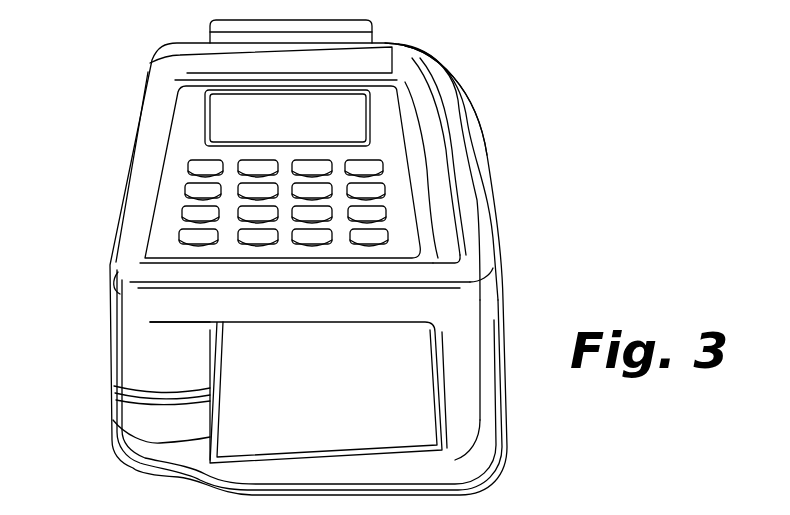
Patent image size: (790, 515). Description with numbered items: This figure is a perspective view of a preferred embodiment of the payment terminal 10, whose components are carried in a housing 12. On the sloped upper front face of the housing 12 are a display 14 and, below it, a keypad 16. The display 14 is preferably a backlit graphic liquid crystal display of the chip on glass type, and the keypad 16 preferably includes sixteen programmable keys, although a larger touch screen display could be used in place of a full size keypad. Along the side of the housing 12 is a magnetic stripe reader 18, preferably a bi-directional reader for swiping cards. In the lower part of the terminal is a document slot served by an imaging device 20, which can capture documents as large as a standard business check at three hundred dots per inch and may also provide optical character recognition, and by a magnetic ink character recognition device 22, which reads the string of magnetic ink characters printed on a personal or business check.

The payment terminal 10 is at (538, 248).
The housing 12 is at (135, 118).
The display 14 is at (232, 104).
The keypad 16 is at (400, 197).
The magnetic stripe reader 18 is at (450, 97).
The imaging device 20 is at (261, 325).
The magnetic ink character recognition device 22 is at (395, 328).